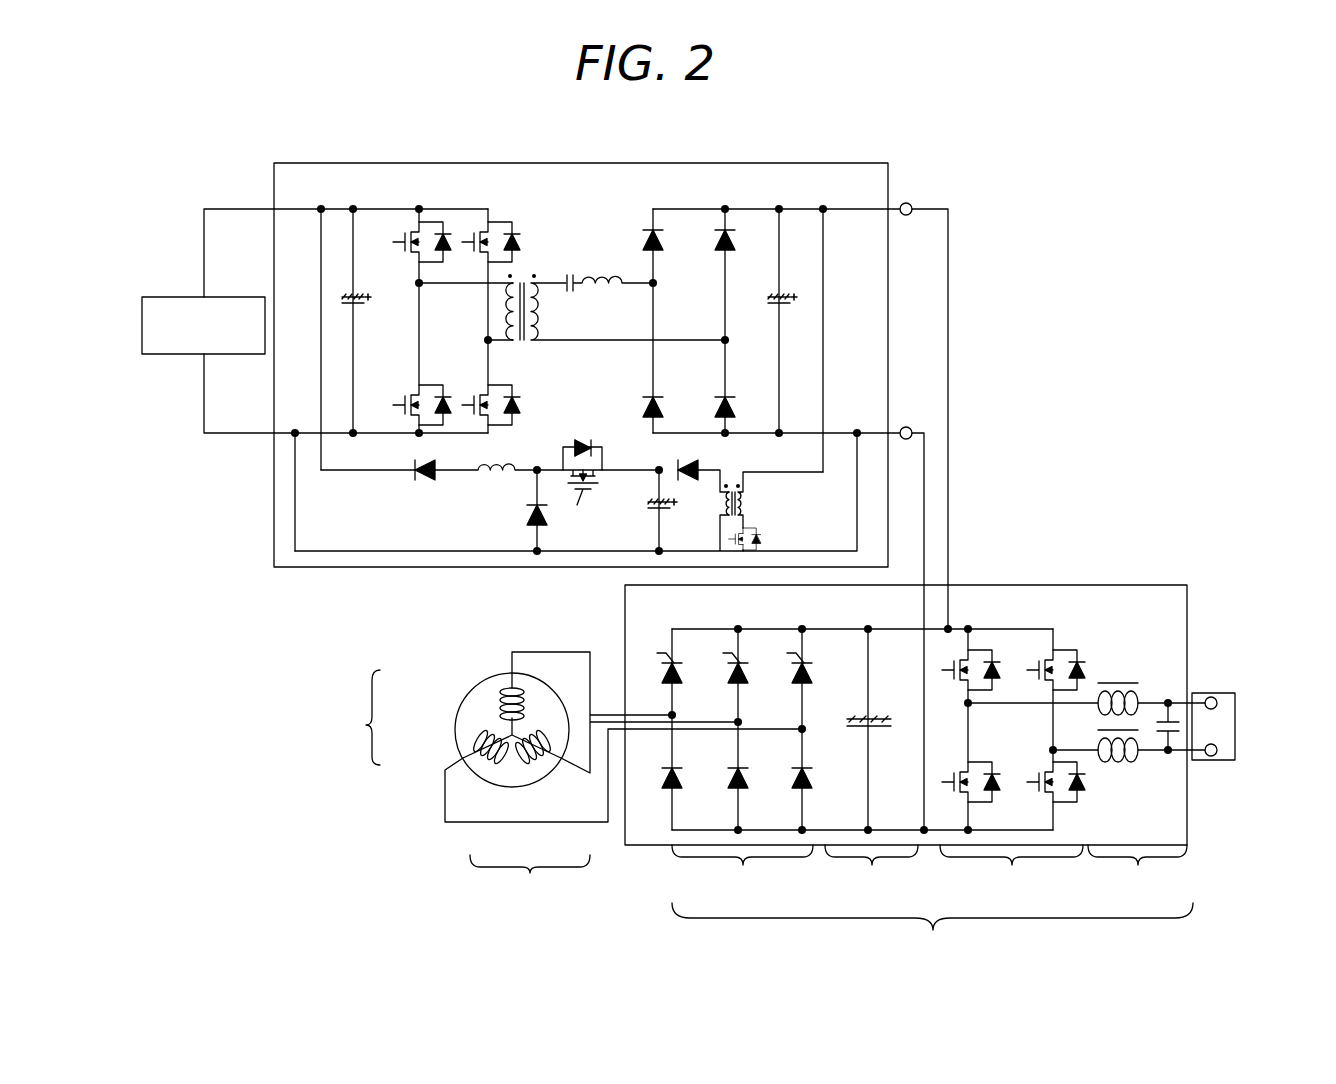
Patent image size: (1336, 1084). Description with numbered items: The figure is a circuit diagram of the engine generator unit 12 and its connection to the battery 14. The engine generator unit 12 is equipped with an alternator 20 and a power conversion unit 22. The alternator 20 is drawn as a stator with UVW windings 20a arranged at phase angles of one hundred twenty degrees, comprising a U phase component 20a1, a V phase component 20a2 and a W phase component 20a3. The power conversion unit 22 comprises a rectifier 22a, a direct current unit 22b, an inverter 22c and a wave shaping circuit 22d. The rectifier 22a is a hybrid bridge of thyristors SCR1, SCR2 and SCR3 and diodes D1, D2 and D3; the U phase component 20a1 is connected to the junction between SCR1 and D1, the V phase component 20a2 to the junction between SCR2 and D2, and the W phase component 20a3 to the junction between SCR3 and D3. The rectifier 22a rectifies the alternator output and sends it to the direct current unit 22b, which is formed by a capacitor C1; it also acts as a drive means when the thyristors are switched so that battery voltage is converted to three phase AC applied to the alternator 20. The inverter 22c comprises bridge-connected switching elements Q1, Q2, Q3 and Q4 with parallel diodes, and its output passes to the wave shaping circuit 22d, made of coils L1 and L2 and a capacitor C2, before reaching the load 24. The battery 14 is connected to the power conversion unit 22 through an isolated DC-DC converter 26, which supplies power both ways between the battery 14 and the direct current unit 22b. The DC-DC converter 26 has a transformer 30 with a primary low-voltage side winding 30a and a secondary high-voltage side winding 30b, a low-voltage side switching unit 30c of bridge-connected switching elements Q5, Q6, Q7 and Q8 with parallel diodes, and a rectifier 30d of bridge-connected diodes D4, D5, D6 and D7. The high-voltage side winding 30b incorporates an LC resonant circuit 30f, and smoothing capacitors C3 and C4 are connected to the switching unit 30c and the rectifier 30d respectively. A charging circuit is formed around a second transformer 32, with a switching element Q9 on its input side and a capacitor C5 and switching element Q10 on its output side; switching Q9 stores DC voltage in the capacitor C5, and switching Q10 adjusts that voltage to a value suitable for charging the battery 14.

The isolated DC-DC converter 26 is at (542, 163).
The battery 14 is at (155, 296).
The transformer 30 is at (527, 350).
The low-voltage side winding 30a is at (512, 282).
The high-voltage side winding 30b is at (545, 341).
The low-voltage side switching unit 30c is at (483, 206).
The rectifier 30d is at (646, 224).
The LC resonant circuit 30f is at (571, 291).
The second transformer 32 is at (744, 503).
The switching element Q5 is at (393, 243).
The switching element Q6 is at (464, 243).
The switching element Q7 is at (393, 405).
The switching element Q8 is at (462, 405).
The switching element Q9 is at (757, 538).
The switching element Q10 is at (577, 491).
The diode D4 is at (658, 248).
The diode D5 is at (728, 250).
The diode D6 is at (685, 390).
The diode D7 is at (755, 390).
The smoothing capacitor C3 is at (358, 306).
The smoothing capacitor C4 is at (783, 307).
The capacitor C5 is at (648, 508).
The engine generator unit 12 is at (530, 879).
The alternator 20 is at (501, 790).
The UVW windings 20a is at (351, 717).
The U phase component 20a1 is at (497, 700).
The V phase component 20a2 is at (545, 757).
The W phase component 20a3 is at (486, 737).
The power conversion unit 22 is at (622, 832).
The rectifier 22a is at (742, 874).
The direct current unit 22b is at (871, 874).
The inverter 22c is at (1011, 874).
The wave shaping circuit 22d is at (1137, 874).
The thyristor SCR1 is at (665, 682).
The thyristor SCR2 is at (728, 677).
The thyristor SCR3 is at (792, 677).
The diode D1 is at (664, 781).
The diode D2 is at (730, 781).
The diode D3 is at (794, 781).
The capacitor C1 is at (870, 728).
The switching element Q1 is at (955, 690).
The switching element Q2 is at (1030, 670).
The switching element Q3 is at (953, 785).
The switching element Q4 is at (1040, 785).
The coil L1 is at (1104, 682).
The coil L2 is at (1100, 762).
The capacitor C2 is at (1158, 735).
The load 24 is at (1222, 693).